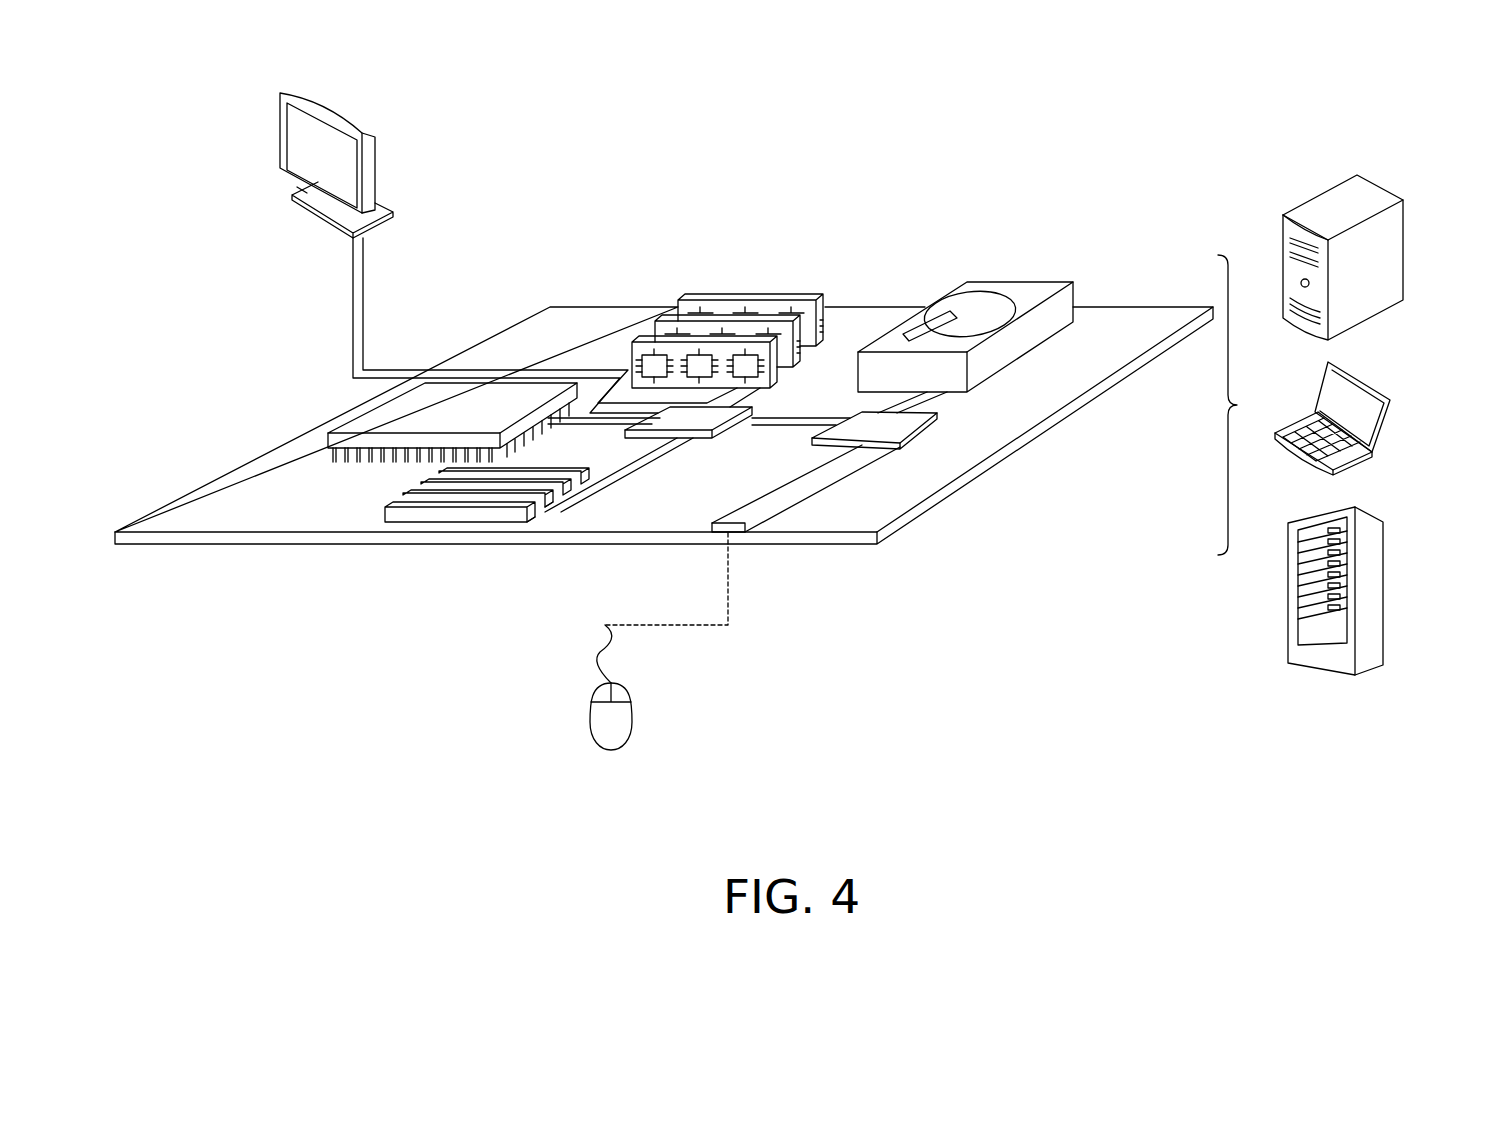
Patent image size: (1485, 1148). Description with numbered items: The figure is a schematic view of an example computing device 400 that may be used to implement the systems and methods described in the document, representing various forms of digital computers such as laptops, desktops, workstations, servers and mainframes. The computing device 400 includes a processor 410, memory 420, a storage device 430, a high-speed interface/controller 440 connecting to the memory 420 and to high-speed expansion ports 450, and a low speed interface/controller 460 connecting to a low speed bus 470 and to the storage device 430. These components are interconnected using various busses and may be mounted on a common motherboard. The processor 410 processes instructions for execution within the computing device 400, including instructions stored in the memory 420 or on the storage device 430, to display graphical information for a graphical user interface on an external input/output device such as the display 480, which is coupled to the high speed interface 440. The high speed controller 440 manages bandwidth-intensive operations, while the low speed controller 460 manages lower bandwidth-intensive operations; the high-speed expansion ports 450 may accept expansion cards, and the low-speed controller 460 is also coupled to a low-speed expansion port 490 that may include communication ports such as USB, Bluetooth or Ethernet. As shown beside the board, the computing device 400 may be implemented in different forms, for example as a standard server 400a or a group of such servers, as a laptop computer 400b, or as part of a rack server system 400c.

The computing device 400 is at (829, 162).
The standard server 400a is at (1313, 196).
The laptop computer 400b is at (1372, 378).
The rack server system 400c is at (1377, 572).
The processor 410 is at (328, 433).
The memory 420 is at (745, 300).
The storage device 430 is at (1015, 282).
The high-speed interface/controller 440 is at (692, 438).
The high-speed expansion ports 450 is at (385, 507).
The low speed interface/controller 460 is at (862, 423).
The low speed bus 470 is at (815, 485).
The display 480 is at (278, 138).
The low-speed expansion port 490 is at (738, 533).